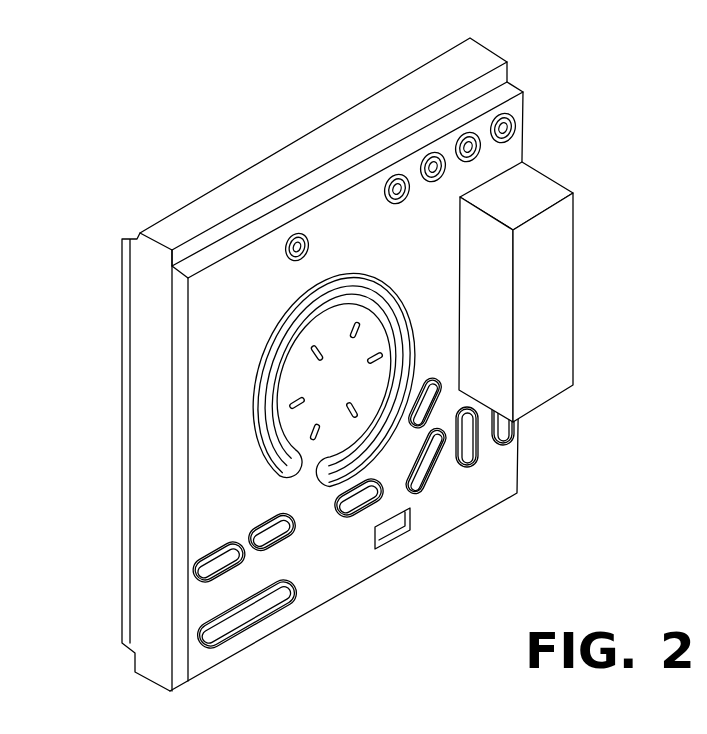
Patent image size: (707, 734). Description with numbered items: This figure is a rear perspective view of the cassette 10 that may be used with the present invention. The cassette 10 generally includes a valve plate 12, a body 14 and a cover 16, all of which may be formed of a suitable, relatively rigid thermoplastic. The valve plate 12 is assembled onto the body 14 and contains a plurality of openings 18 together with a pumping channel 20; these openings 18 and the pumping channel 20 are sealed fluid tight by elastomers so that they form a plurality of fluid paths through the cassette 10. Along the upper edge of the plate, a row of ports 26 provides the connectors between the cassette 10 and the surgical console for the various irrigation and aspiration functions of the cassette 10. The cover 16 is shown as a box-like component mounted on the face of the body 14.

The cassette 10 is at (322, 364).
The valve plate 12 is at (350, 577).
The body 14 is at (172, 217).
The cover 16 is at (516, 292).
The openings 18 is at (266, 528).
The pumping channel 20 is at (270, 362).
The ports 26 is at (397, 178).